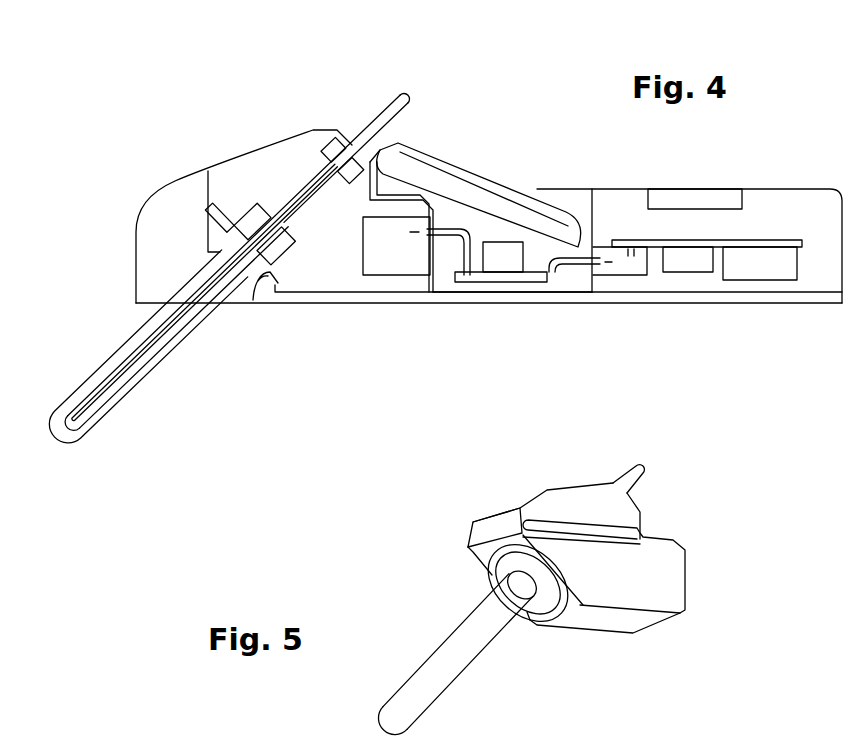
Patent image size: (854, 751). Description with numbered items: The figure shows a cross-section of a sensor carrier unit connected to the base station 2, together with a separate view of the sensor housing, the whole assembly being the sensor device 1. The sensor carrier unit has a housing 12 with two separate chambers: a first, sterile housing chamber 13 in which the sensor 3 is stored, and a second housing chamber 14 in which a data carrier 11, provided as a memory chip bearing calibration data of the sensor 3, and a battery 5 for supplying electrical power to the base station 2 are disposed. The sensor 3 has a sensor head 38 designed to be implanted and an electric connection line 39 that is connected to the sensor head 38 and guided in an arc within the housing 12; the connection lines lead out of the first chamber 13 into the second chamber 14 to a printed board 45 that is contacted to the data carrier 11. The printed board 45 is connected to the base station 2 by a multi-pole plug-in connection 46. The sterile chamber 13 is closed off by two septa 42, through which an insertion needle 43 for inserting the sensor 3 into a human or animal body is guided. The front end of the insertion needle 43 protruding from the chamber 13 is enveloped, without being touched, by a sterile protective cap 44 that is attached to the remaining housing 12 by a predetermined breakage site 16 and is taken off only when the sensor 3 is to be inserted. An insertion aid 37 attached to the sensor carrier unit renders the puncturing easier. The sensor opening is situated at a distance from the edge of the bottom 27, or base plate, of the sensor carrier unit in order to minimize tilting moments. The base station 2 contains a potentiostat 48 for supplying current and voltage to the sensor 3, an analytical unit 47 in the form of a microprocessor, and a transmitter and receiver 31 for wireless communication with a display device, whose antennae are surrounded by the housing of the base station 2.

In FIG. 4, the sensor device 1 is at (206, 145).
In FIG. 4, the base station 2 is at (760, 188).
In FIG. 4, the sensor 3 is at (160, 352).
In FIG. 4, the battery 5 is at (460, 182).
In FIG. 4, the data carrier 11 is at (505, 262).
In FIG. 4, the housing 12 is at (293, 303).
In FIG. 4, the first housing chamber 13 is at (334, 244).
In FIG. 5, the first housing chamber 13 is at (650, 555).
In FIG. 4, the second housing chamber 14 is at (548, 196).
In FIG. 4, the predetermined breakage site 16 is at (262, 274).
In FIG. 4, the bottom 27 is at (578, 300).
In FIG. 4, the transmitter and receiver 31 is at (695, 195).
In FIG. 4, the insertion aid 37 is at (376, 132).
In FIG. 4, the sensor head 38 is at (95, 404).
In FIG. 4, the connection line 39 is at (338, 204).
In FIG. 4, the septa 42 is at (258, 220).
In FIG. 4, the insertion needle 43 is at (80, 410).
In FIG. 4, the sterile protective cap 44 is at (110, 422).
In FIG. 5, the sterile protective cap 44 is at (438, 664).
In FIG. 4, the printed board 45 is at (530, 280).
In FIG. 4, the plug-in connection 46 is at (621, 264).
In FIG. 4, the analytical unit 47 is at (772, 262).
In FIG. 4, the potentiostat 48 is at (693, 262).